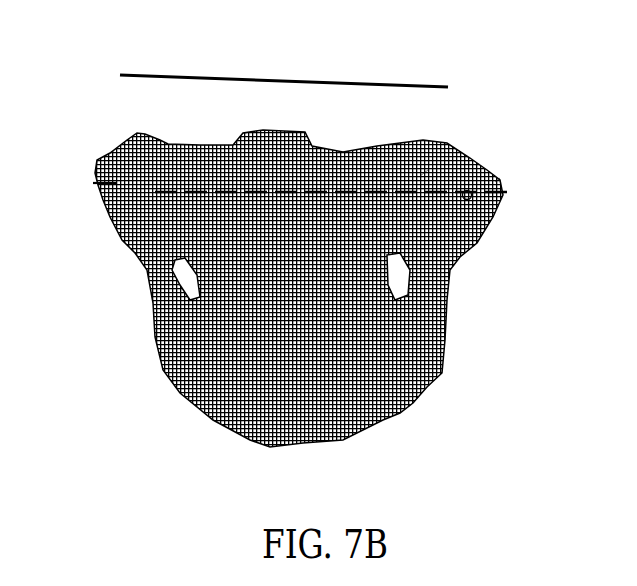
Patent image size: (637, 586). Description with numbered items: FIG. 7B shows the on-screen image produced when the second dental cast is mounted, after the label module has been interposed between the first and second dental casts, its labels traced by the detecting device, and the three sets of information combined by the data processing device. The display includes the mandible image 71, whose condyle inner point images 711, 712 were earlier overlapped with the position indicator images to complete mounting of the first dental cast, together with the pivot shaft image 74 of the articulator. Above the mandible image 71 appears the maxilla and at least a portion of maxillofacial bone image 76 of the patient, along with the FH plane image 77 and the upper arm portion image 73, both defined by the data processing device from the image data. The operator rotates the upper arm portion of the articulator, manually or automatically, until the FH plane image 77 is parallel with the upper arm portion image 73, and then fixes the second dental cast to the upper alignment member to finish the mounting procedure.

The mandible image 71 is at (413, 362).
The condyle inner point image 711 is at (123, 183).
The condyle inner point image 712 is at (473, 199).
The upper arm portion image 73 is at (395, 85).
The pivot shaft image 74 is at (472, 195).
The maxilla and at least a portion of maxillofacial bone image 76 is at (422, 173).
The FH plane image 77 is at (497, 180).